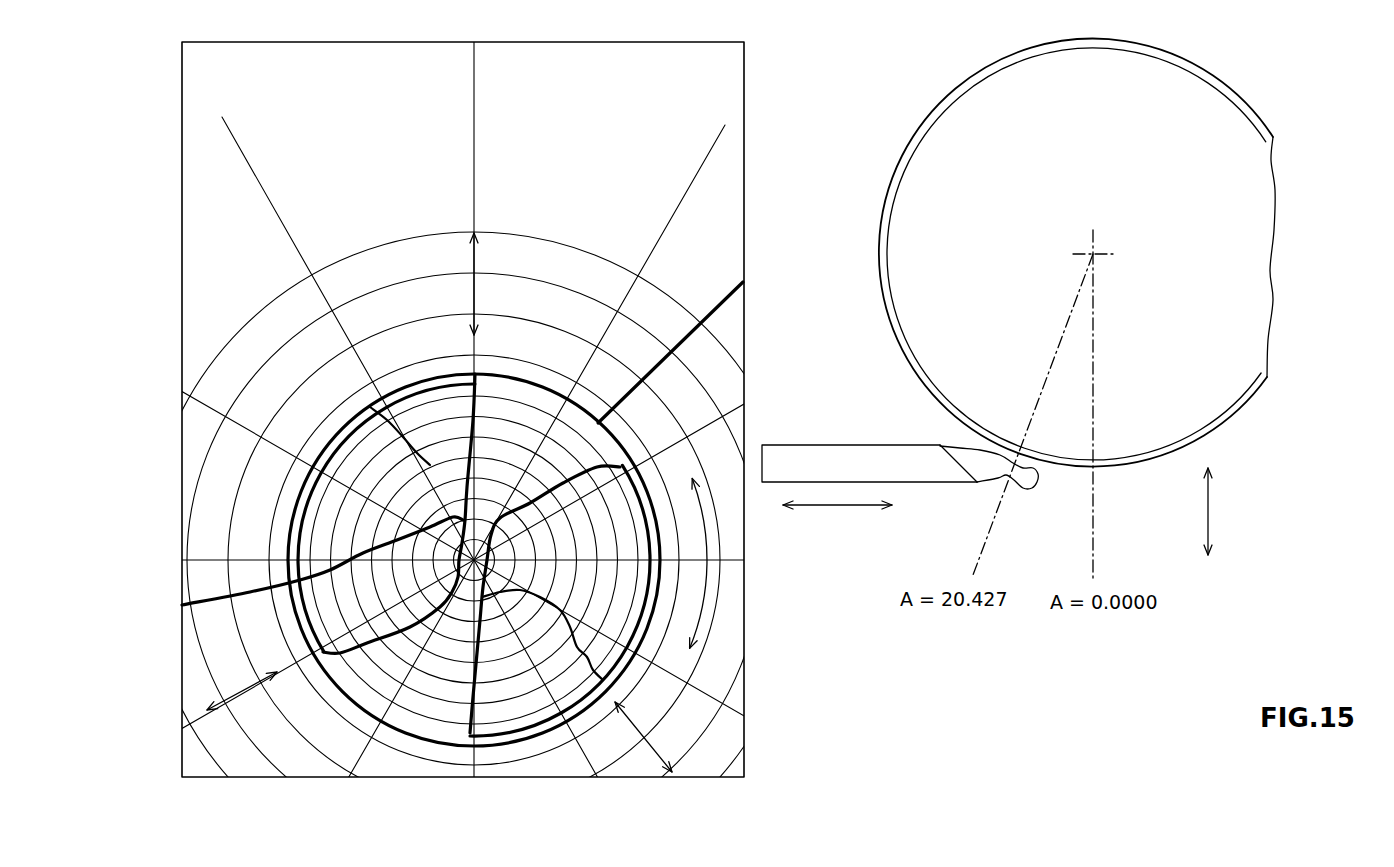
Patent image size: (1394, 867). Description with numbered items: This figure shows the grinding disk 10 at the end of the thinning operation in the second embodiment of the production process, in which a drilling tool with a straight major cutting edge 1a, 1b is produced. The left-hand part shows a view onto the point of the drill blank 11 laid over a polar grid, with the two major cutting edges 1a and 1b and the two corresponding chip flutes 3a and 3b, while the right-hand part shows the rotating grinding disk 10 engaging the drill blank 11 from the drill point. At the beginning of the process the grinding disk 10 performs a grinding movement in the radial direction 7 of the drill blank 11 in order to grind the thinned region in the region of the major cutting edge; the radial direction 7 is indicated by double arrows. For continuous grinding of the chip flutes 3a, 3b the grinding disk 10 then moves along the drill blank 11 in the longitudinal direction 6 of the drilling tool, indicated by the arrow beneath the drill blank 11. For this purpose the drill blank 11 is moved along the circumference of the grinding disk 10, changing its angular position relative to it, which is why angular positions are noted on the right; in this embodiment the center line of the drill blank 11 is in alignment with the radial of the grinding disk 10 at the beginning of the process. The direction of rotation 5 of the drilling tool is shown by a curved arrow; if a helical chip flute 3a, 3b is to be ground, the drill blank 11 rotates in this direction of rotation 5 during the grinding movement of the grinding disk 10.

The major cutting edge 1a is at (470, 687).
The major cutting edge 1b is at (481, 426).
The chip flute 3a is at (538, 662).
The chip flute 3b is at (370, 407).
The direction of rotation 5 is at (715, 554).
The longitudinal direction 6 is at (836, 508).
The radial direction 7 is at (481, 283).
The grinding disk 10 is at (690, 335).
The drill blank 11 is at (839, 445).